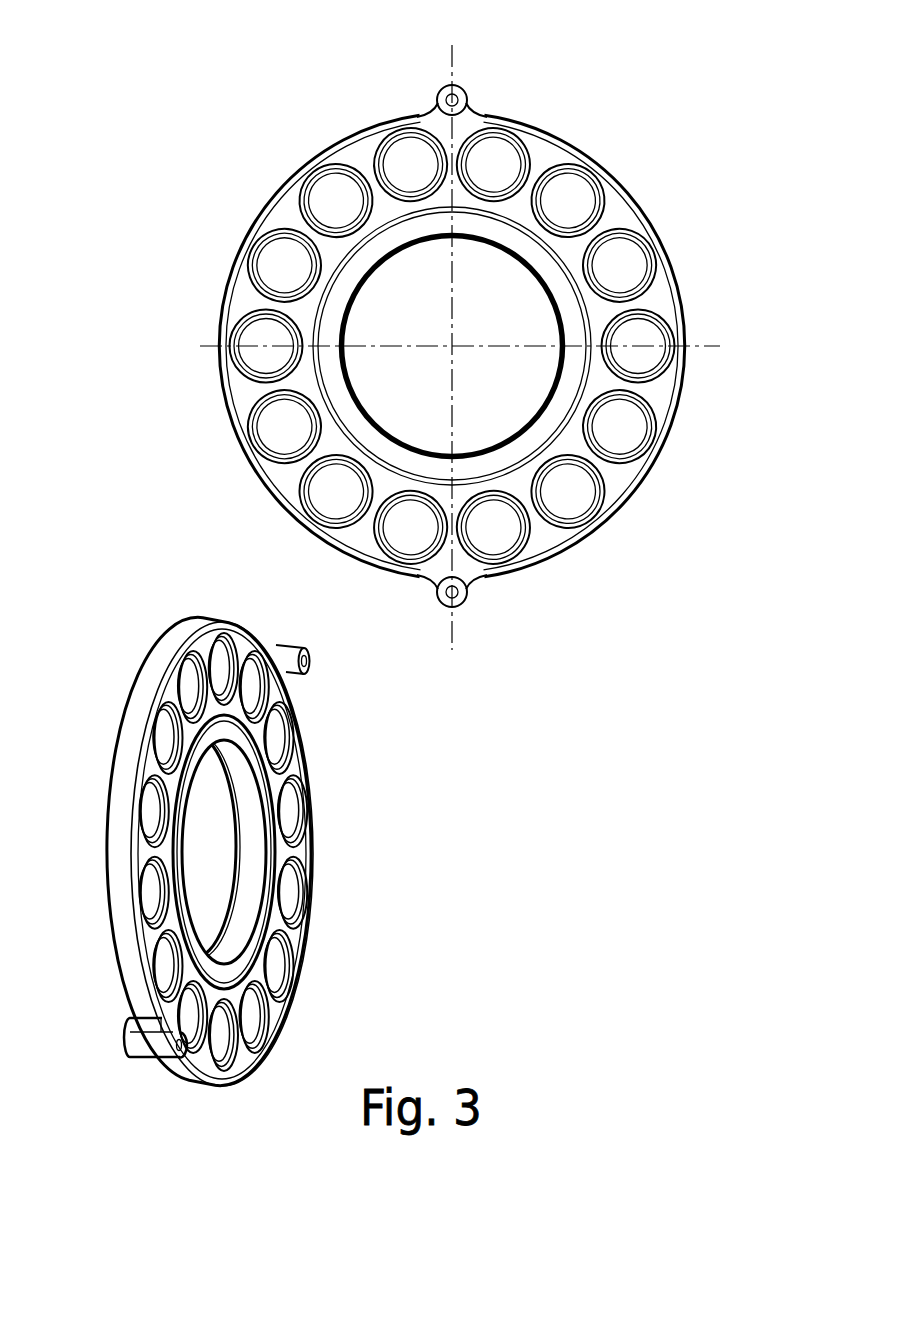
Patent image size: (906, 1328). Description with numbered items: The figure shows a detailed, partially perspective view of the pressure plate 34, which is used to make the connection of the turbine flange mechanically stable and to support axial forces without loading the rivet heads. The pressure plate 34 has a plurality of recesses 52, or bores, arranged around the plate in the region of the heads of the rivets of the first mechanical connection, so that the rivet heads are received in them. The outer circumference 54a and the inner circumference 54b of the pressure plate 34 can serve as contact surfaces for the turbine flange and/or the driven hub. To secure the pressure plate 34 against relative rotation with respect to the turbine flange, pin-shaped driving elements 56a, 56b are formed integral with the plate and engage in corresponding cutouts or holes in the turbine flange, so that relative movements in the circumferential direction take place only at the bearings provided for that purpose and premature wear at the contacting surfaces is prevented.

The pressure plate 34 is at (728, 596).
The recesses 52 is at (613, 260).
The outer circumference 54a is at (123, 792).
The inner circumference 54b is at (245, 882).
The pin-shaped driving element 56a is at (446, 88).
The pin-shaped driving element 56b is at (470, 600).